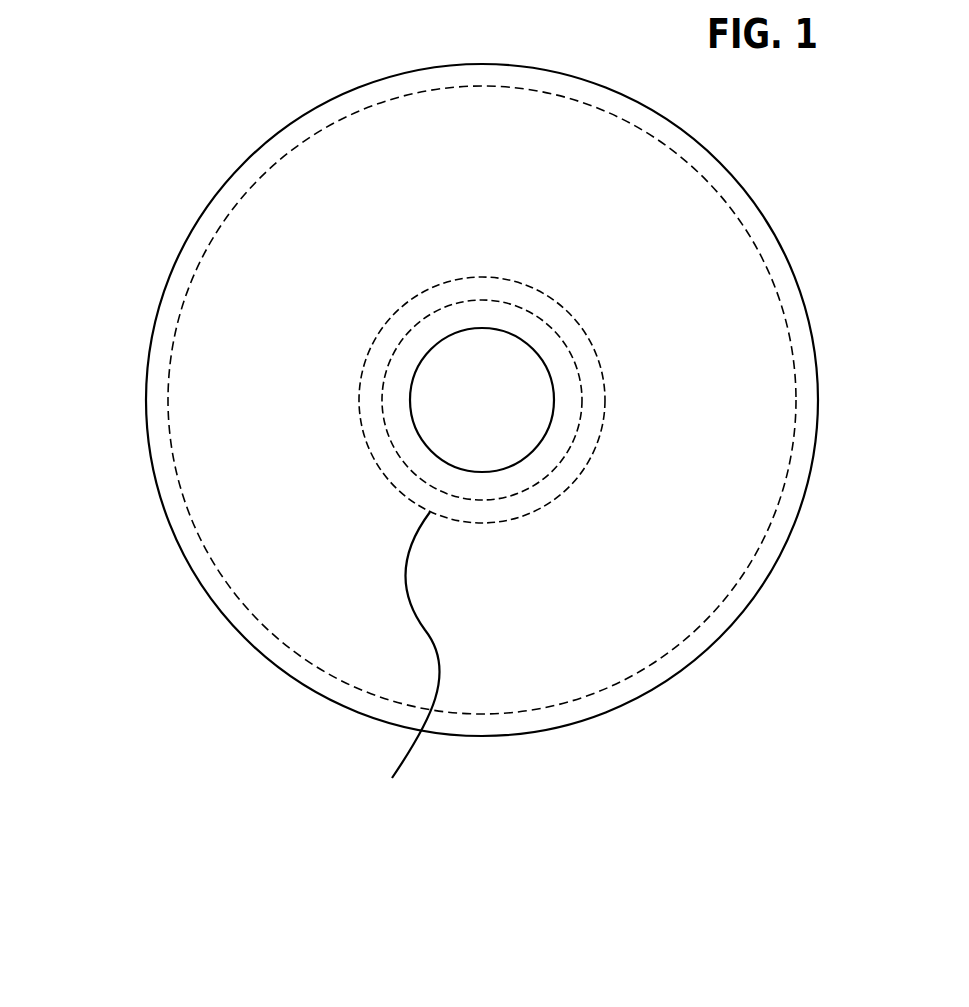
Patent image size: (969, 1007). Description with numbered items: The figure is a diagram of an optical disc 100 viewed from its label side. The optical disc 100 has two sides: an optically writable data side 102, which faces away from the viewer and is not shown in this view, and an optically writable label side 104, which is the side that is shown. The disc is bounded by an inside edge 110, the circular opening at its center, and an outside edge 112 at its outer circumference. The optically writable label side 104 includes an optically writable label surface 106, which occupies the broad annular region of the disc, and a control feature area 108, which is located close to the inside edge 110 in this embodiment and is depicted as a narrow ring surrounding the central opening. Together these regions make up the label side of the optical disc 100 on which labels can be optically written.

The optical disc 100 is at (138, 462).
The optically writable data side 102 is at (781, 559).
The optically writable label side 104 is at (692, 153).
The optically writable label surface 106 is at (614, 208).
The control feature area 108 is at (423, 745).
The inside edge 110 is at (415, 426).
The outside edge 112 is at (275, 670).